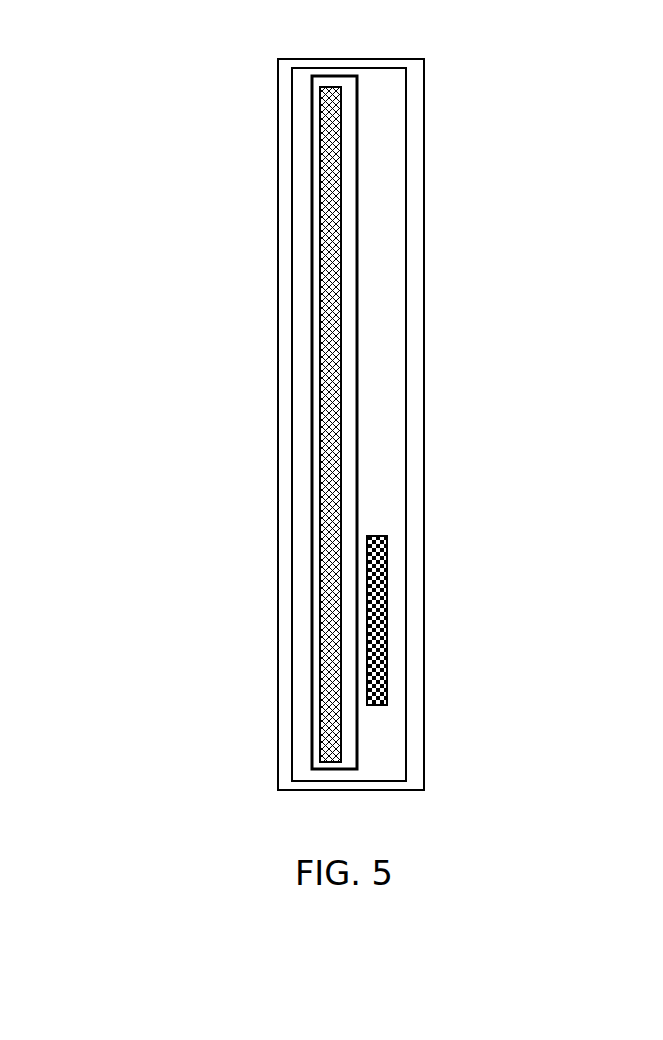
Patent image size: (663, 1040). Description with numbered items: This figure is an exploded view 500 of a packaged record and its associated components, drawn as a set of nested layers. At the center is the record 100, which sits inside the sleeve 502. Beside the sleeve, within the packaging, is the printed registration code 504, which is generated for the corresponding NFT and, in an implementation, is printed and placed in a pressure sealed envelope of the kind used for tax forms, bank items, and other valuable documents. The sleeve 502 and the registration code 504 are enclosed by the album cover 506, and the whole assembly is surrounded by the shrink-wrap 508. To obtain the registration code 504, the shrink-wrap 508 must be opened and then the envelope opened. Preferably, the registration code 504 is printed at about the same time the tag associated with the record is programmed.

The exploded view 500 is at (88, 86).
The sleeve 502 is at (310, 154).
The record 100 is at (320, 212).
The album cover 506 is at (292, 272).
The shrink-wrap 508 is at (277, 320).
The registration code 504 is at (389, 570).